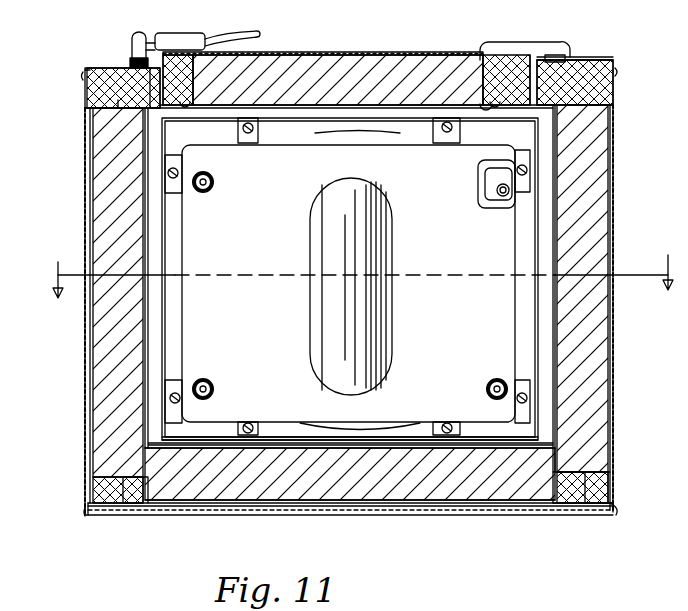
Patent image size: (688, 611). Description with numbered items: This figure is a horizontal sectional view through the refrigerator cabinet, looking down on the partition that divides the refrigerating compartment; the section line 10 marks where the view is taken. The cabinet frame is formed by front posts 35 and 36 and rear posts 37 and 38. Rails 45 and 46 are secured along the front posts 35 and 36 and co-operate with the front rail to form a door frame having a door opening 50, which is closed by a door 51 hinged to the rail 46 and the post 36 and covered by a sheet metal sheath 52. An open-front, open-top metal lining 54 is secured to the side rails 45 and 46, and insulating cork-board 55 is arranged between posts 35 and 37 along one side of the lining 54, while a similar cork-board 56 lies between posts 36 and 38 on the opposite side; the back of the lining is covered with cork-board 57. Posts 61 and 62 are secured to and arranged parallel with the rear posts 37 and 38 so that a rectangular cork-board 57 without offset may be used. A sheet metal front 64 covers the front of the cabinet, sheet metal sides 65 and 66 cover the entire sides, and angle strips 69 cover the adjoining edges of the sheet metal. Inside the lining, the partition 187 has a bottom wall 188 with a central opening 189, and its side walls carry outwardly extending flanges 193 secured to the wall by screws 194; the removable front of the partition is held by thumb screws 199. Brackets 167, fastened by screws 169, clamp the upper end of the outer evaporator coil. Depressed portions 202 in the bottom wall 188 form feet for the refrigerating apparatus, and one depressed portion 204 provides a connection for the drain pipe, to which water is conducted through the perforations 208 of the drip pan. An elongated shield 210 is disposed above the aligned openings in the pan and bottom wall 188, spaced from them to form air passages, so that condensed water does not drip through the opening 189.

The section line 10 is at (361, 293).
The front post 35 is at (88, 92).
The front post 36 is at (604, 78).
The rear post 37 is at (118, 510).
The rear post 38 is at (600, 492).
The rail 45 is at (120, 80).
The rail 46 is at (560, 62).
The door opening 50 is at (530, 80).
The door 51 is at (380, 60).
The sheet metal sheath 52 is at (335, 54).
The metal lining 54 is at (555, 215).
The cork-board 55 is at (112, 372).
The cork-board 56 is at (585, 352).
The cork-board 57 is at (232, 482).
The post 61 is at (135, 508).
The post 62 is at (560, 520).
The sheet metal front 64 is at (583, 70).
The sheet metal side 65 is at (85, 228).
The sheet metal side 66 is at (612, 200).
The angle strip 69 is at (608, 510).
The bracket 167 is at (258, 133).
The screw 169 is at (440, 125).
The partition 187 is at (182, 212).
The bottom wall 188 is at (318, 418).
The central opening 189 is at (312, 246).
The outwardly extending flange 193 is at (172, 382).
The screw 194 is at (182, 400).
The thumb screw 199 is at (205, 140).
The depressed portion 202 is at (208, 190).
The depressed portion 204 is at (485, 178).
The perforation 208 is at (498, 193).
The elongated shield 210 is at (362, 315).